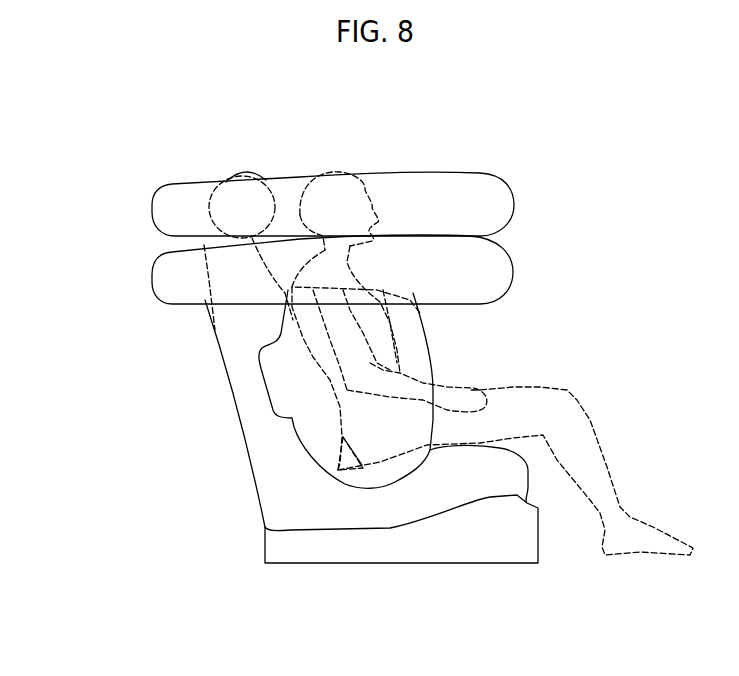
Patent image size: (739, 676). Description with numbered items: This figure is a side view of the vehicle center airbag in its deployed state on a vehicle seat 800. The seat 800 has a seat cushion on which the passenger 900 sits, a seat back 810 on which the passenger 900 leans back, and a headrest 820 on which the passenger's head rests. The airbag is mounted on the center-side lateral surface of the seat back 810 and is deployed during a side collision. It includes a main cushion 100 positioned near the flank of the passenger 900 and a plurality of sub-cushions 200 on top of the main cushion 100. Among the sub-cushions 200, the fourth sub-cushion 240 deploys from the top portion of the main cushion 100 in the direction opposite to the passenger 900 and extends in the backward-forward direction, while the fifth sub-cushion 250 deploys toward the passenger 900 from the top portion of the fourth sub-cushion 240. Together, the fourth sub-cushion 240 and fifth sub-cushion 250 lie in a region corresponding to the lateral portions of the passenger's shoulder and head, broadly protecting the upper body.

The main cushion 100 is at (448, 363).
The sub-cushions 200 is at (371, 415).
The fourth sub-cushion 240 is at (167, 283).
The fifth sub-cushion 250 is at (167, 212).
The vehicle seat 800 is at (315, 426).
The seat back 810 is at (277, 481).
The headrest 820 is at (247, 172).
The passenger 900 is at (570, 378).